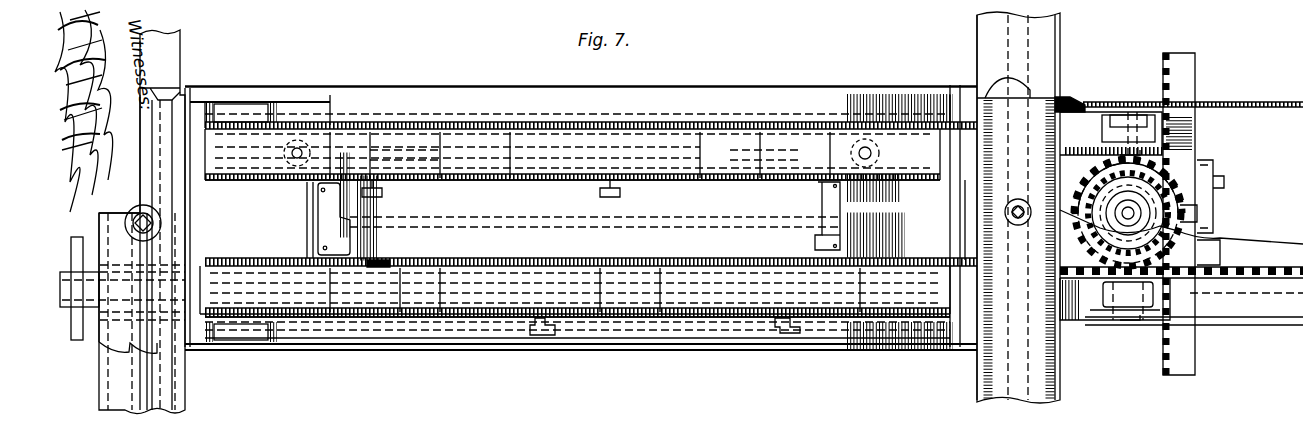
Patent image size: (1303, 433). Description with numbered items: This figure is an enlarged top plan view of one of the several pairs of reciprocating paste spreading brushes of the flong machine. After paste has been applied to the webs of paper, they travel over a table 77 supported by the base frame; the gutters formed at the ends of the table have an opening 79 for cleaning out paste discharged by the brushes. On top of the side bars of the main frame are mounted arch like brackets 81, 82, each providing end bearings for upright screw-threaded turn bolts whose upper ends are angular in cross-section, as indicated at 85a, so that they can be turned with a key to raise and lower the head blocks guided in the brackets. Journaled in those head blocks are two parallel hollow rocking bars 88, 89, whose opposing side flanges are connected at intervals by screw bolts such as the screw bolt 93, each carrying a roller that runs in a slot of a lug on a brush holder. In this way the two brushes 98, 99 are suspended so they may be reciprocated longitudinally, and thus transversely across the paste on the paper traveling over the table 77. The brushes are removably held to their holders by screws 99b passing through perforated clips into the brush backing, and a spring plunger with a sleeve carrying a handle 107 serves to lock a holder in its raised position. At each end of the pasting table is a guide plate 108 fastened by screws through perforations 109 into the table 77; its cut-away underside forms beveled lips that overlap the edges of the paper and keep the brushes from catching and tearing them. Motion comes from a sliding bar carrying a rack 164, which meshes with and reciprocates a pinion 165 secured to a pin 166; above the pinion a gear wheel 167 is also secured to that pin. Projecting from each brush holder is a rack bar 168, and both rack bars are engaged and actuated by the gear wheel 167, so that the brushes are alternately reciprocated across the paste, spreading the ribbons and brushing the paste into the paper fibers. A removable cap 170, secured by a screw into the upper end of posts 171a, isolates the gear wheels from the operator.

The arch like bracket 81 is at (183, 98).
The arch like bracket 82 is at (172, 250).
The angular upper end of turn bolt 85a is at (160, 222).
The handle pin 107 is at (122, 280).
The brush 99 is at (492, 122).
The hollow rocking bar 88 is at (655, 138).
The opening 79 is at (872, 138).
The perforation 109 is at (835, 184).
The guide plate 108 is at (822, 238).
The screw bolt 93 is at (448, 262).
The hollow rocking bar 89 is at (590, 314).
The brush 98 is at (500, 320).
The table 77 is at (770, 332).
The screw 99b is at (800, 358).
The rack bar 168 is at (1090, 138).
The removable cap 170 is at (1232, 326).
The post 171a is at (1148, 105).
The rack 164 is at (1195, 87).
The pinion 165 is at (1200, 200).
The pin 166 is at (1200, 212).
The gear wheel 167 is at (1200, 186).